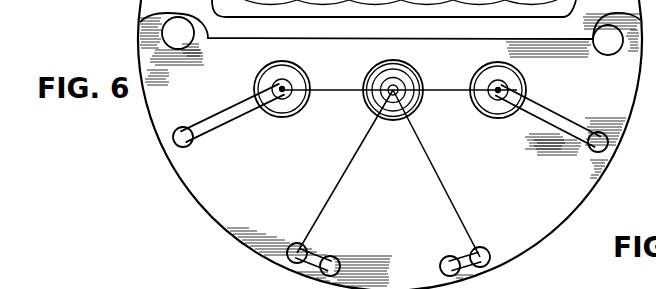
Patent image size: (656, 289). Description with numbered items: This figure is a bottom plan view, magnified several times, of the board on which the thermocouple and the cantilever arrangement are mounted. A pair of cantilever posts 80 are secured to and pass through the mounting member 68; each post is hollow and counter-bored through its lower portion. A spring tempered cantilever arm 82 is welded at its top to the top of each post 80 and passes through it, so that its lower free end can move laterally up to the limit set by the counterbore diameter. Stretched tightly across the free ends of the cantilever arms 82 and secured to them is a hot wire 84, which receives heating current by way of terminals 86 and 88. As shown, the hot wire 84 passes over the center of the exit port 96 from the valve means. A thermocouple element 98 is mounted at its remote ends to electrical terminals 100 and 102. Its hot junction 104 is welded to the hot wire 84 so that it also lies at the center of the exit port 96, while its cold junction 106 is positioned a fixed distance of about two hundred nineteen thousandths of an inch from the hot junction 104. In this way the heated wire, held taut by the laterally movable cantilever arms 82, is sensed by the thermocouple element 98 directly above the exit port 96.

The mounting member 68 is at (193, 92).
The cantilever post 80 is at (293, 78).
The cantilever arm 82 is at (281, 88).
The hot wire 84 is at (347, 92).
The terminal 86 is at (598, 142).
The terminal 88 is at (183, 137).
The exit port 96 is at (395, 84).
The hot junction 104 is at (402, 100).
The cold junction 106 is at (362, 142).
The thermocouple element 98 is at (387, 183).
The electrical terminal 100 is at (352, 241).
The electrical terminal 102 is at (440, 266).